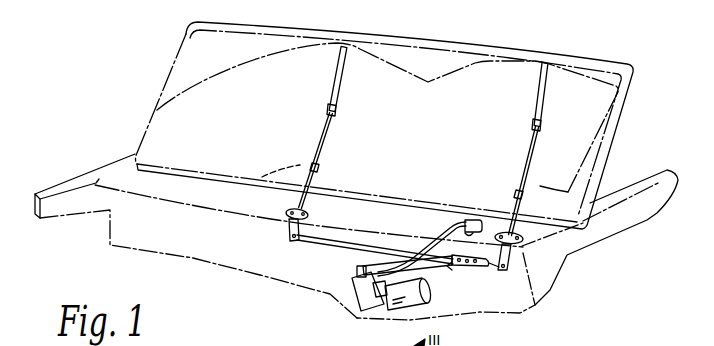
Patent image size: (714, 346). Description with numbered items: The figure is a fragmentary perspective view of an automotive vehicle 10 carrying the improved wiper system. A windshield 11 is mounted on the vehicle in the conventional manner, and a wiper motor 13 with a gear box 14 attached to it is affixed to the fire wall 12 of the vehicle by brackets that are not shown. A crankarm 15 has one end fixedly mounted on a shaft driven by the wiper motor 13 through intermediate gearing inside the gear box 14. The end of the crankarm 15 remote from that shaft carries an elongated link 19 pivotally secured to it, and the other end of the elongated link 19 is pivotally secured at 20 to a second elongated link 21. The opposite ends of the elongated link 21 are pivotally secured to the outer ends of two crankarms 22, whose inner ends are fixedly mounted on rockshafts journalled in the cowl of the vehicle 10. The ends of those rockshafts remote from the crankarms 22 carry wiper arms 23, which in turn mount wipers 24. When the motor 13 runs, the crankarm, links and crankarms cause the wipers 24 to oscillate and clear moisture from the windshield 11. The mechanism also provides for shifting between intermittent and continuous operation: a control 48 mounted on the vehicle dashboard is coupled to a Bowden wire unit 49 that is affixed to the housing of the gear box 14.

The automotive vehicle 10 is at (643, 218).
The windshield 11 is at (447, 72).
The fire wall 12 is at (226, 251).
The wiper motor 13 is at (402, 307).
The gear box 14 is at (360, 298).
The crankarm 15 is at (357, 272).
The elongated link 19 is at (365, 262).
The pivotal connection 20 is at (467, 264).
The elongated link 21 is at (381, 248).
The crankarms 22 is at (289, 232).
The wiper arms 23 is at (305, 178).
The wipers 24 is at (341, 89).
The control 48 is at (462, 223).
The Bowden wire unit 49 is at (452, 247).